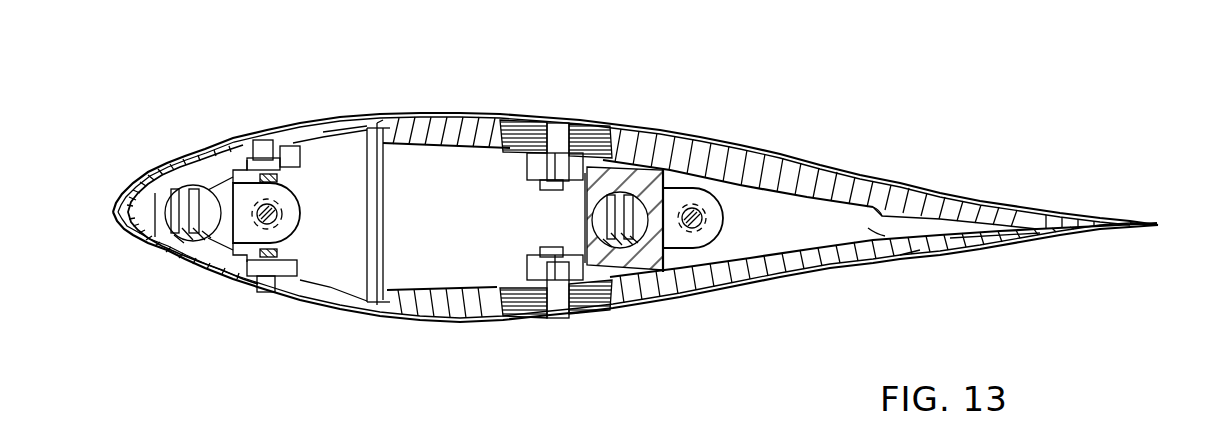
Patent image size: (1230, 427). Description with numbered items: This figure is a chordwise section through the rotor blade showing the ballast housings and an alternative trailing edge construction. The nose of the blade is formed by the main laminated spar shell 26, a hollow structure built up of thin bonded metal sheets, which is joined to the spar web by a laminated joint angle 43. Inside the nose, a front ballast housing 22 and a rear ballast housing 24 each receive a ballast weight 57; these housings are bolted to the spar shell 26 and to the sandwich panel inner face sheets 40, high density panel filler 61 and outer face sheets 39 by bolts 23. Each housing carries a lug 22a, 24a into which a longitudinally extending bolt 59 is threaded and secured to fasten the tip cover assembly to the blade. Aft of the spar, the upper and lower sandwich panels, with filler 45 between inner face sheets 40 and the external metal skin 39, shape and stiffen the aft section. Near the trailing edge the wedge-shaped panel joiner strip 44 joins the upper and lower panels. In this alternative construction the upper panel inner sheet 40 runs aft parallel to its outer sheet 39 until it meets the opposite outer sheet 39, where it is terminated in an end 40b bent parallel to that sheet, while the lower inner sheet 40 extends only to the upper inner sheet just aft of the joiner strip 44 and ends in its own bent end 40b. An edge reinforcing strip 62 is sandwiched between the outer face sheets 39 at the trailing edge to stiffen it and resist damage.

The front ballast housing 22 is at (217, 167).
The lug 22a is at (290, 203).
The bolt 23 is at (263, 137).
The rear ballast housing 24 is at (667, 170).
The lug 24a is at (703, 247).
The main laminated spar shell 26 is at (323, 126).
The external metal skin 39 is at (867, 172).
The inner face sheet 40 is at (450, 143).
The end 40b is at (1037, 228).
The laminated joint angle 43 is at (352, 132).
The panel joiner strip 44 is at (910, 255).
The filler 45 is at (447, 123).
The ballast weight 57 is at (188, 212).
The bolt 59 is at (282, 222).
The high density panel filler 61 is at (603, 127).
The edge reinforcing strip 62 is at (1133, 218).